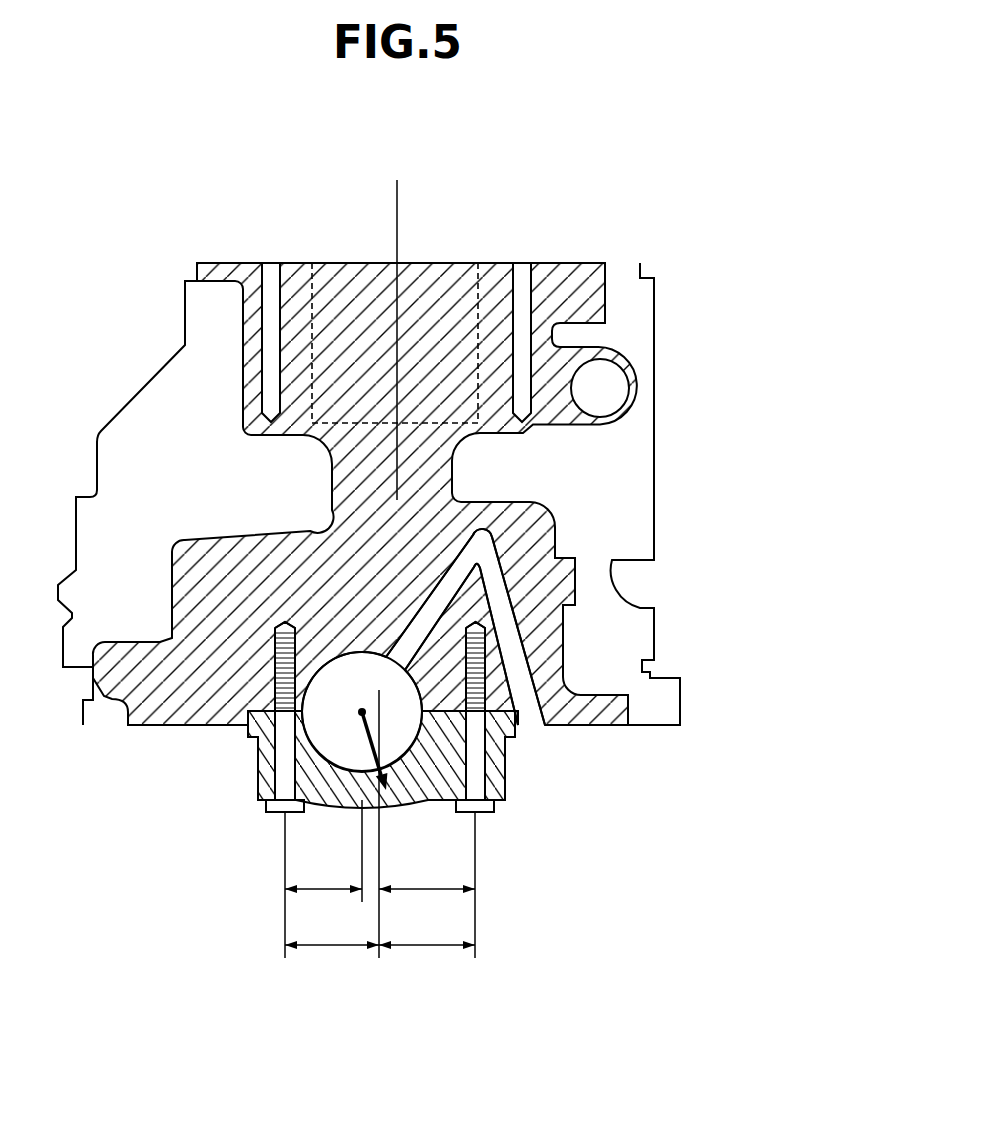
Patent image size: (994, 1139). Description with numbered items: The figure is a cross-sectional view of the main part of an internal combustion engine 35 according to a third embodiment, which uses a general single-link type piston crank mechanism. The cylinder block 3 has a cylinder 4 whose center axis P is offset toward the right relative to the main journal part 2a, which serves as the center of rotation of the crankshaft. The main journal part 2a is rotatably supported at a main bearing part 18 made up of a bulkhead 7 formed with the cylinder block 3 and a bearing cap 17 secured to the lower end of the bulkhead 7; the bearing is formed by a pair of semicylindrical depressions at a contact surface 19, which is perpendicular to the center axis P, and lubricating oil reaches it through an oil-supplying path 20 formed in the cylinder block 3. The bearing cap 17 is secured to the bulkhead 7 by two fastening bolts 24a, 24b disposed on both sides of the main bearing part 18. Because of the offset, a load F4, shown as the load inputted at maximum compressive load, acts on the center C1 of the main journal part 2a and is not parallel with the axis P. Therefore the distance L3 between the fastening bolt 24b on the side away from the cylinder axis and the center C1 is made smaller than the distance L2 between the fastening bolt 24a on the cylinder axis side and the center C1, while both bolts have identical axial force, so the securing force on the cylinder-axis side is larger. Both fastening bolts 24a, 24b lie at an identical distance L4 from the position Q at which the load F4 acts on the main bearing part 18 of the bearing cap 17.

The cylinder block 3 is at (633, 521).
The cylinder 4 is at (480, 325).
The bulkhead 7 is at (160, 717).
The bearing cap 17 is at (492, 748).
The main bearing part 18 is at (258, 800).
The contact surface 19 is at (248, 731).
The oil-supplying path 20 is at (515, 660).
The internal combustion engine 35 is at (682, 324).
The main journal part 2a is at (398, 729).
The fastening bolt 24a is at (480, 813).
The fastening bolt 24b is at (278, 813).
The center of main journal part C1 is at (362, 712).
The load F4 is at (376, 745).
The center axis of cylinder P is at (396, 222).
The position at which load acts Q is at (504, 801).
The distance L2 is at (427, 876).
The distance L3 is at (323, 851).
The distance L4 is at (380, 930).